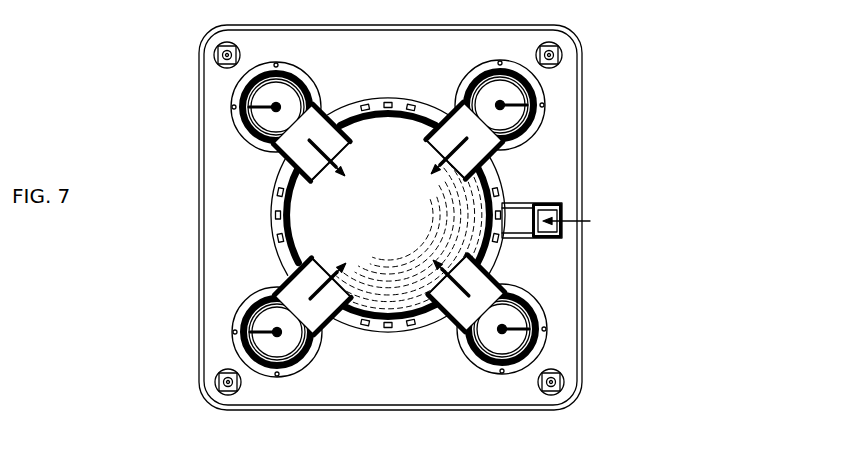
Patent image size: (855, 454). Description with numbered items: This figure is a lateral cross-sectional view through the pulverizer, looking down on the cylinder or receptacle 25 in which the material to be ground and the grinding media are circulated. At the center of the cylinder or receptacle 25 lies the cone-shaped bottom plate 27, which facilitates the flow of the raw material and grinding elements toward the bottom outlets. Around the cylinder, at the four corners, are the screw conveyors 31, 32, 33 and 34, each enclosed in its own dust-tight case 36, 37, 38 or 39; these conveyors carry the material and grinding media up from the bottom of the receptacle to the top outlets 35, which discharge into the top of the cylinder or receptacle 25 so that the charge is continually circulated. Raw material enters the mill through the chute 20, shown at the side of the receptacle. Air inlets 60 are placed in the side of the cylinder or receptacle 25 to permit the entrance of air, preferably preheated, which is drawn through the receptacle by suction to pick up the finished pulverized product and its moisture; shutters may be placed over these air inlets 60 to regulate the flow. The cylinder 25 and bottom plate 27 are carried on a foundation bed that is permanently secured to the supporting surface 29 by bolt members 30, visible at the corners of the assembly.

The chute 20 is at (563, 208).
The cylinder or receptacle 25 is at (412, 105).
The cone-shaped bottom plate 27 is at (405, 232).
The supporting surface 29 is at (563, 95).
The bolt members 30 is at (216, 58).
The screw conveyor 31 is at (507, 92).
The screw conveyor 32 is at (520, 315).
The screw conveyor 33 is at (290, 348).
The screw conveyor 34 is at (270, 120).
The top outlets 35 is at (450, 142).
The dust-tight case 36 is at (537, 98).
The dust-tight case 37 is at (541, 329).
The dust-tight case 38 is at (236, 369).
The dust-tight case 39 is at (231, 115).
The air inlets 60 is at (383, 103).